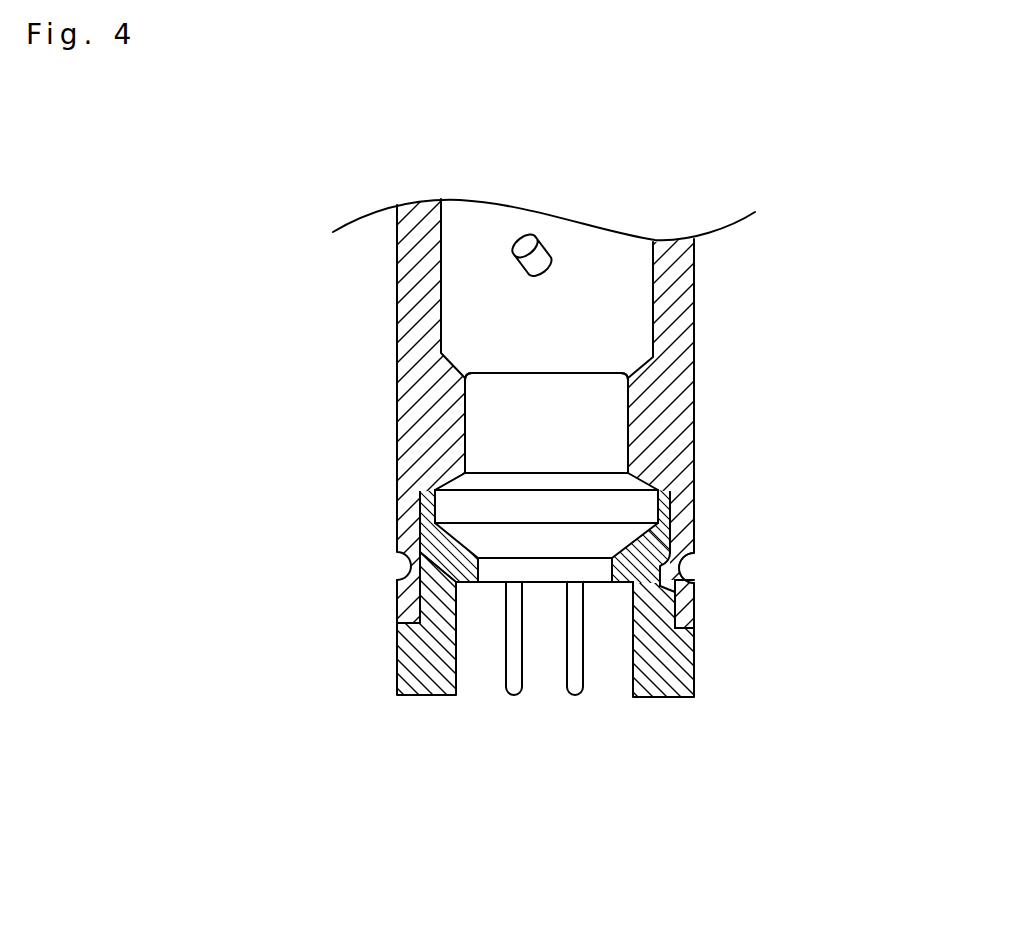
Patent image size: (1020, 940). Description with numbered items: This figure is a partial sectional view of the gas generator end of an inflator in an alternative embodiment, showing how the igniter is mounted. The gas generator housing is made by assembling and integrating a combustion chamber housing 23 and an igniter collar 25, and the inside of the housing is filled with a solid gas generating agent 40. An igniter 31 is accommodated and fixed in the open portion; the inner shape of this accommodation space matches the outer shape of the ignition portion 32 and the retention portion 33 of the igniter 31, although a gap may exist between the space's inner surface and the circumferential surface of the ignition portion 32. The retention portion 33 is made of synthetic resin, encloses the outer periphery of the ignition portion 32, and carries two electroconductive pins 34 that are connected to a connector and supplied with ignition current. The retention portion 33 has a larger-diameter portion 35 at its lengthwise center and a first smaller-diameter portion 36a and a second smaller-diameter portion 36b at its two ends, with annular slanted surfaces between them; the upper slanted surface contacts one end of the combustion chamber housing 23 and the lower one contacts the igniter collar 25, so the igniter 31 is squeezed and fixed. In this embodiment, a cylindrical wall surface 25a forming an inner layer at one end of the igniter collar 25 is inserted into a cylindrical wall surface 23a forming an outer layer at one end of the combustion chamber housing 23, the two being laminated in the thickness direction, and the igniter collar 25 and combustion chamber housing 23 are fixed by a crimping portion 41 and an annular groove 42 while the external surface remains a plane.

The combustion chamber housing 23 is at (412, 312).
The cylindrical wall surface 23a is at (690, 608).
The igniter collar 25 is at (415, 662).
The cylindrical wall surface 25a is at (660, 603).
The igniter 31 is at (858, 337).
The ignition portion 32 is at (590, 424).
The retention portion 33 is at (630, 510).
The electroconductive pins 34 is at (575, 696).
The larger-diameter portion 35 is at (443, 510).
The first smaller-diameter portion 36a is at (487, 570).
The second smaller-diameter portion 36b is at (456, 471).
The solid gas generating agent 40 is at (548, 258).
The crimping portion 41 is at (686, 570).
The annular groove 42 is at (685, 565).